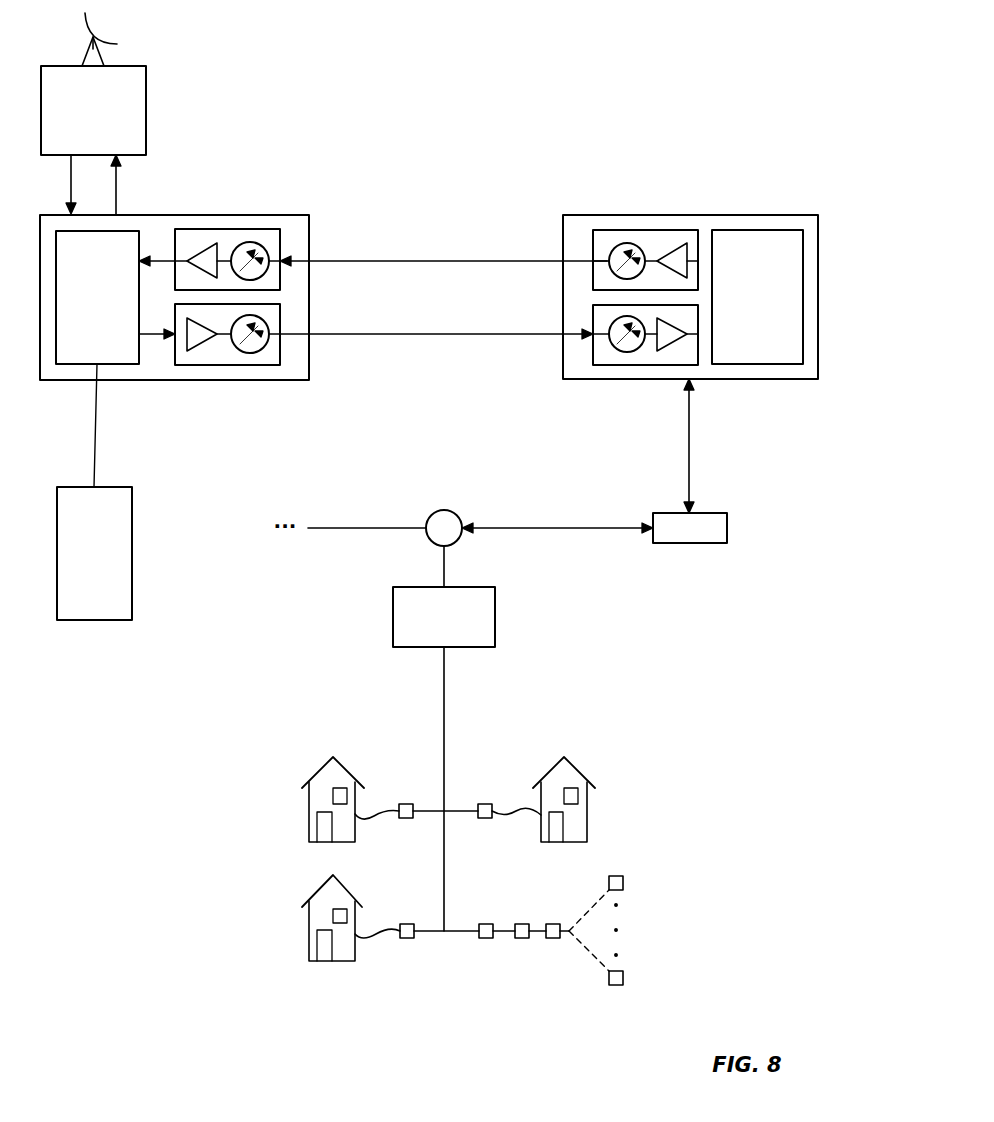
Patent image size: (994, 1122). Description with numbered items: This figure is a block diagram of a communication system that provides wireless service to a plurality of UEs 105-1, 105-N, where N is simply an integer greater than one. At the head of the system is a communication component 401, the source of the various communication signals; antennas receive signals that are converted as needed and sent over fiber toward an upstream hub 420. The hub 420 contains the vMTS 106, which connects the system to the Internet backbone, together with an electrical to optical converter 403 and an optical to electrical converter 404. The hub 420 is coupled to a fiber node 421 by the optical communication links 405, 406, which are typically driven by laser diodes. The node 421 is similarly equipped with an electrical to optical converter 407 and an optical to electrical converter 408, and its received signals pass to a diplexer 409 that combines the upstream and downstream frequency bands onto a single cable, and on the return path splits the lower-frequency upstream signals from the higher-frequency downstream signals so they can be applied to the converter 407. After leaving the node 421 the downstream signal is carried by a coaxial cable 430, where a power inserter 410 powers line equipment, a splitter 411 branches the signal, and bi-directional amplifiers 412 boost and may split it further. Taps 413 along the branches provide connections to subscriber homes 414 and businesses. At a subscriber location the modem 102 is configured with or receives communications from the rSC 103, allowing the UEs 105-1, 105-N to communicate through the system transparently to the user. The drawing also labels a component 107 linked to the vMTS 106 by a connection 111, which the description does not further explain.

The communication component 401 is at (93, 84).
The upstream hub 420 is at (305, 380).
The modem termination system (vMTS) 106 is at (97, 297).
The optical to electrical converter 404 is at (212, 229).
The electrical to optical converter 403 is at (226, 380).
The fiber optic cable link 406 is at (431, 261).
The fiber optic cable link 405 is at (392, 334).
The fiber node 421 is at (797, 379).
The electrical to optical converter 407 is at (645, 230).
The optical to electrical converter 408 is at (646, 365).
The diplexer 409 is at (757, 297).
The coaxial cable 430 is at (697, 468).
The power inserter 410 is at (690, 528).
The splitter 411 is at (444, 510).
The bi-directional amplifier 412 is at (444, 617).
The taps 413 is at (413, 804).
The subscriber's homes 414 is at (327, 757).
The modem 102 is at (522, 924).
The rSC 103 is at (553, 938).
The UE 105-1 is at (617, 876).
The UE 105-N is at (623, 978).
The control link 111 is at (94, 428).
The cSC (cable service controller) 107 is at (94, 553).